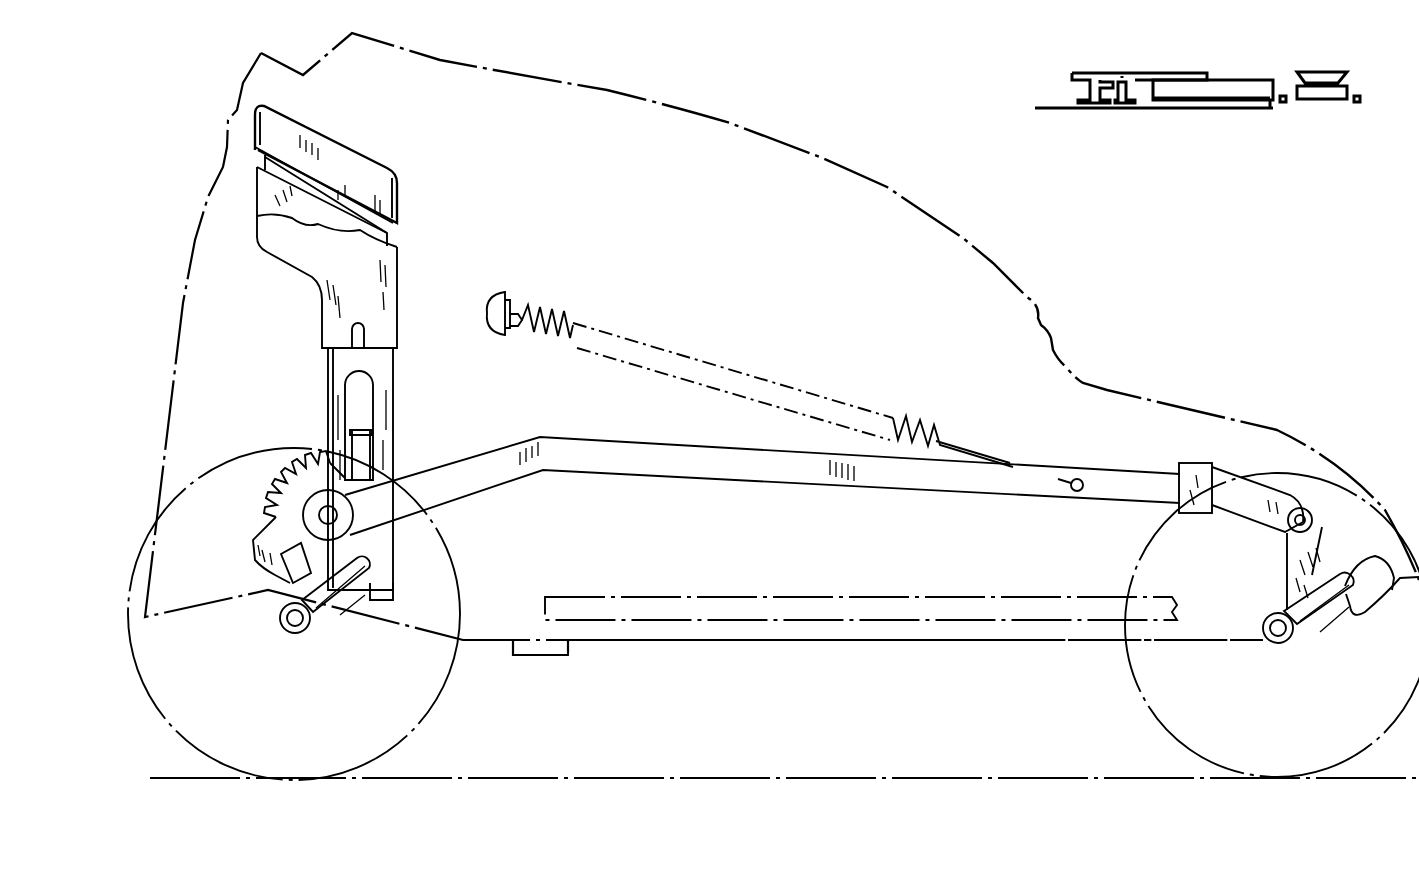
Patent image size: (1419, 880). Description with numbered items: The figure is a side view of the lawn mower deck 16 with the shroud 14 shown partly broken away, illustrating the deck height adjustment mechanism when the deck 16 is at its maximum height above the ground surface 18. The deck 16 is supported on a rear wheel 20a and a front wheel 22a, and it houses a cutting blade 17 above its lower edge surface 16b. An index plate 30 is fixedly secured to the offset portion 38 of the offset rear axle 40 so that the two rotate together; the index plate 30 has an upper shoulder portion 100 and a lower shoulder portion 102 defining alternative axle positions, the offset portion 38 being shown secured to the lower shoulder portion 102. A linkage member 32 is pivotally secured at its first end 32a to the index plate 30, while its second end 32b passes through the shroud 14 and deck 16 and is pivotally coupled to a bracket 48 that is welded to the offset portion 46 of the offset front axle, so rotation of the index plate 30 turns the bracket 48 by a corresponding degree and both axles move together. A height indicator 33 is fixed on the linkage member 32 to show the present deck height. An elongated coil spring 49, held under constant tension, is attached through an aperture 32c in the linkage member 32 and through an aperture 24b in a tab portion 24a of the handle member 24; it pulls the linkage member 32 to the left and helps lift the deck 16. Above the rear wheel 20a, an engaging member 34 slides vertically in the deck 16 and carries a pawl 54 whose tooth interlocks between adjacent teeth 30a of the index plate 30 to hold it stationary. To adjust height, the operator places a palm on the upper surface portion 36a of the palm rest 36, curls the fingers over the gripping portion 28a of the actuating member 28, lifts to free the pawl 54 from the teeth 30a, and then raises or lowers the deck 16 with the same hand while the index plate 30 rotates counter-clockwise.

The shroud 14 is at (963, 238).
The deck 16 is at (637, 642).
The lower edge surface 16b is at (790, 642).
The cutting blade 17 is at (852, 597).
The ground surface 18 is at (740, 778).
The rear wheel 20a is at (430, 718).
The front wheel 22a is at (1140, 693).
The handle member 24 is at (490, 287).
The tab portion 24a is at (503, 313).
The aperture 24b is at (507, 323).
The actuating member 28 is at (308, 216).
The gripping portion 28a is at (310, 223).
The index plate 30 is at (257, 497).
The teeth 30a is at (282, 492).
The linkage member 32 is at (823, 472).
The first end 32a is at (400, 517).
The second end 32b is at (1265, 505).
The aperture 32c is at (1078, 479).
The height indicator 33 is at (1195, 470).
The engaging member 34 is at (330, 360).
The palm rest 36 is at (345, 162).
The upper surface portion 36a is at (363, 153).
The offset portion 38 is at (393, 593).
The offset rear axle 40 is at (320, 632).
The offset portion 46 is at (1333, 610).
The bracket 48 is at (1292, 557).
The coil spring 49 is at (903, 418).
The pawl 54 is at (360, 465).
The upper shoulder portion 100 is at (282, 577).
The lower shoulder portion 102 is at (330, 623).